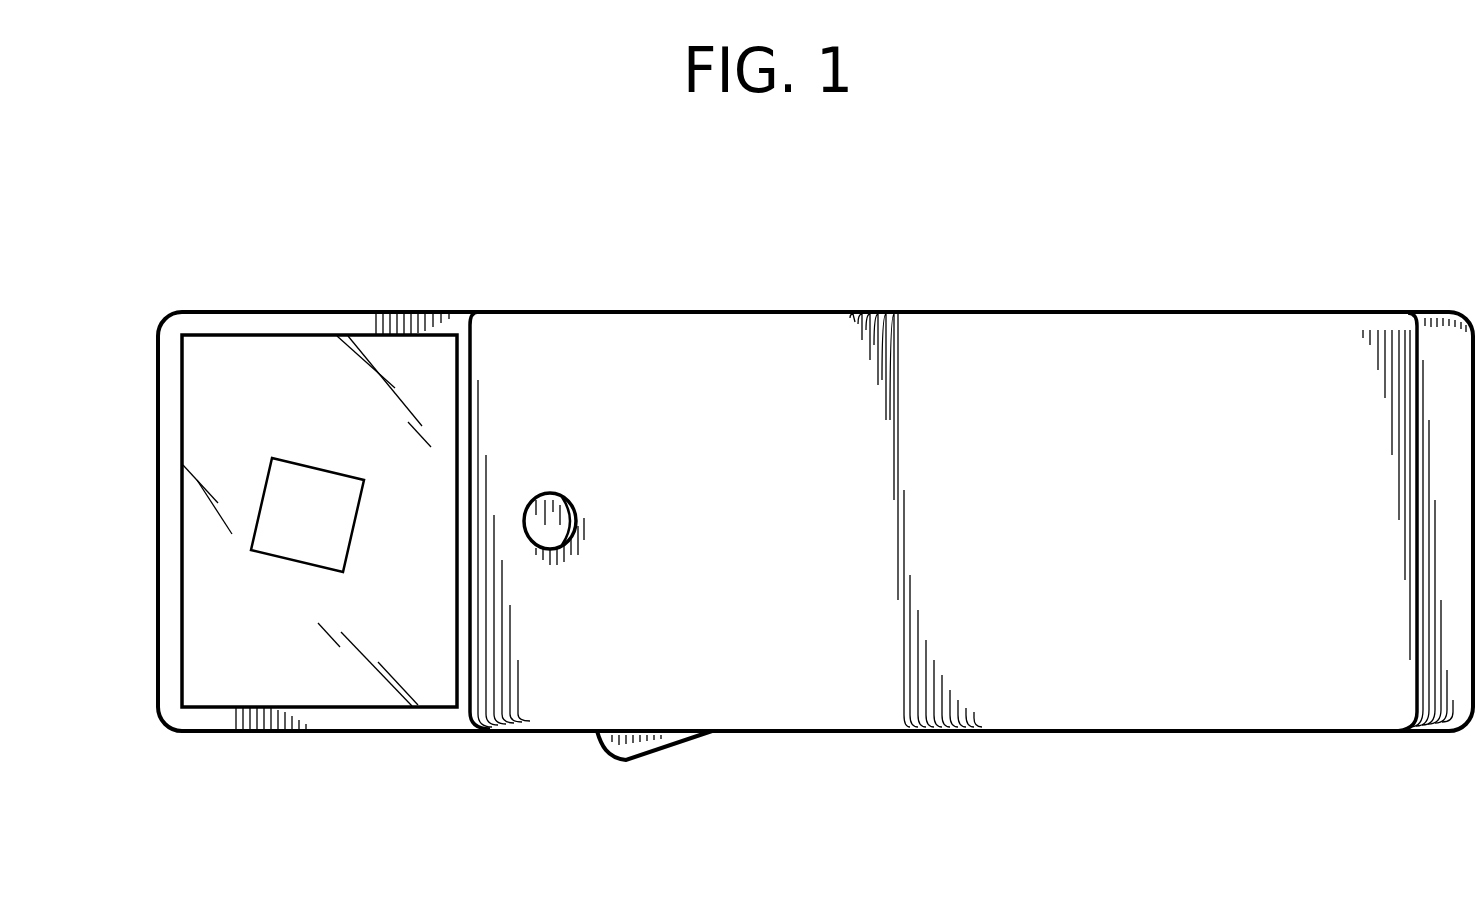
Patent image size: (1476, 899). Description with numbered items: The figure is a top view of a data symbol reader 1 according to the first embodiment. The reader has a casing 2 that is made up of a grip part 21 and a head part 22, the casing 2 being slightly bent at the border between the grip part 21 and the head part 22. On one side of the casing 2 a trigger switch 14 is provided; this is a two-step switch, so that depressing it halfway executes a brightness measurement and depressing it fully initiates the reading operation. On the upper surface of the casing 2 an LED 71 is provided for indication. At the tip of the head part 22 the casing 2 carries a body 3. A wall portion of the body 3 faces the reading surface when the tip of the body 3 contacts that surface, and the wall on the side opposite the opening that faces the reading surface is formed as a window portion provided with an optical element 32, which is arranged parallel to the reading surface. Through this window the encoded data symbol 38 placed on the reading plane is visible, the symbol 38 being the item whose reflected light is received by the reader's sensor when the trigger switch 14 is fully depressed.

The data symbol reader 1 is at (1092, 190).
The casing 2 is at (1175, 262).
The grip part 21 is at (1265, 309).
The head part 22 is at (383, 312).
The body 3 is at (278, 734).
The optical element 32 is at (243, 365).
The encoded data symbol 38 is at (335, 542).
The LED 71 is at (570, 503).
The trigger switch 14 is at (632, 747).